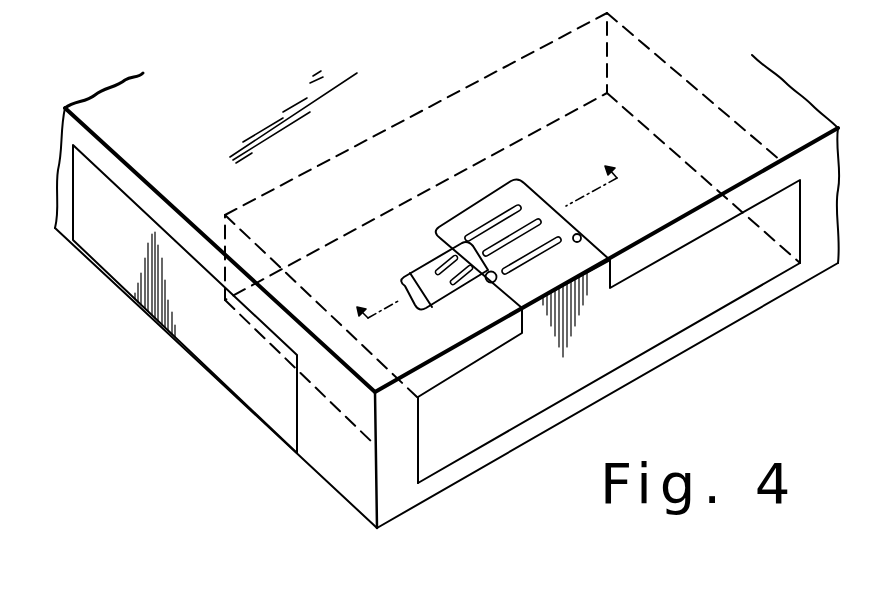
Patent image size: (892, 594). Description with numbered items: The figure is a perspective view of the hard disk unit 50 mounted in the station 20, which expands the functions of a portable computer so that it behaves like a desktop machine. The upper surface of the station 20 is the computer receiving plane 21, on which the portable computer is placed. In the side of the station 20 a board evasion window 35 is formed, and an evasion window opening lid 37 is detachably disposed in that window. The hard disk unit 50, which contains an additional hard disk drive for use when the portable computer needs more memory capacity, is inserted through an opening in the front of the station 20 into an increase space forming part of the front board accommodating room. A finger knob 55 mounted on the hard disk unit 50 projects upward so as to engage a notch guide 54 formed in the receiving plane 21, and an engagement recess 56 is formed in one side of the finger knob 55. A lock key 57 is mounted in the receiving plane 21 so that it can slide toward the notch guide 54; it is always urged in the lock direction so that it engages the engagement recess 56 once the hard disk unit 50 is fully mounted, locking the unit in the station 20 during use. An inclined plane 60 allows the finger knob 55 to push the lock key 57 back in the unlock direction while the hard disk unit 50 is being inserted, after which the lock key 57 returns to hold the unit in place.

The station 20 is at (118, 92).
The computer receiving plane 21 is at (243, 117).
The board evasion window 35 is at (172, 247).
The evasion window opening lid 37 is at (225, 380).
The hard disk unit 50 is at (543, 408).
The notch guide 54 is at (582, 236).
The finger knob 55 is at (541, 203).
The engagement recess 56 is at (463, 248).
The lock key 57 is at (428, 271).
The inclined plane 60 is at (489, 283).